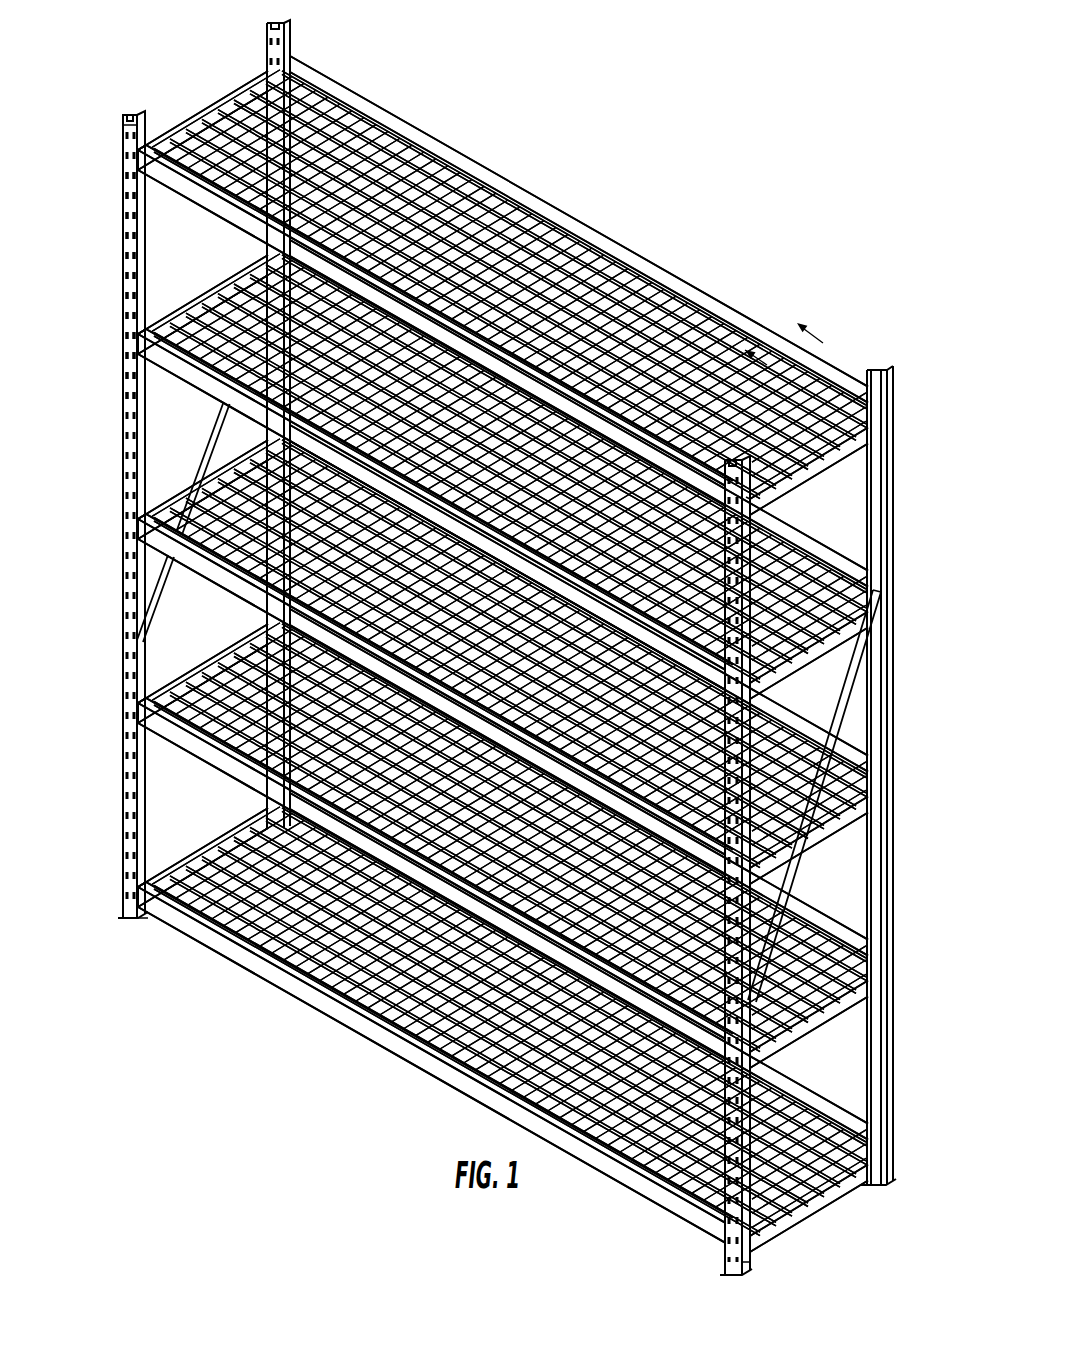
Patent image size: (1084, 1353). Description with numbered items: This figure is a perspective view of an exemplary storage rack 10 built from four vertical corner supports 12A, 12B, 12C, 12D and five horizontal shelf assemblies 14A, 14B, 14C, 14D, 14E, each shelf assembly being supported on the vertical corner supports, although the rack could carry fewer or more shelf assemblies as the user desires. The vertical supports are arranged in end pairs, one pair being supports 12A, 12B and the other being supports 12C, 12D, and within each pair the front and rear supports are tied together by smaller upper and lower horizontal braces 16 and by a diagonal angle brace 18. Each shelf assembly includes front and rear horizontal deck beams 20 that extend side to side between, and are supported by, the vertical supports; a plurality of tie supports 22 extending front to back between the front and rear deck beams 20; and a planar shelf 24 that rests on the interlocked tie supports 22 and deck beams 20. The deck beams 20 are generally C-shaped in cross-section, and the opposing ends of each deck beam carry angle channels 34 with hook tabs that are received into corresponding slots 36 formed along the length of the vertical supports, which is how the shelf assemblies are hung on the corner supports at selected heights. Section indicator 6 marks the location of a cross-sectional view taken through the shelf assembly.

The storage rack 10 is at (502, 637).
The vertical corner support 12A is at (134, 115).
The vertical corner support 12B is at (284, 26).
The vertical corner support 12C is at (747, 1257).
The vertical corner support 12D is at (882, 370).
The horizontal shelf assembly 14A is at (482, 158).
The horizontal shelf assembly 14B is at (200, 382).
The horizontal shelf assembly 14C is at (192, 560).
The horizontal shelf assembly 14D is at (186, 750).
The horizontal shelf assembly 14E is at (225, 962).
The horizontal brace 16 is at (204, 110).
The angle brace 18 is at (196, 470).
The horizontal deck beam 20 is at (138, 151).
The tie support 22 is at (346, 148).
The planar shelf 24 is at (440, 235).
The angle channel 34 is at (128, 128).
The slot 36 is at (126, 192).
The section line 6- 6 is at (776, 332).